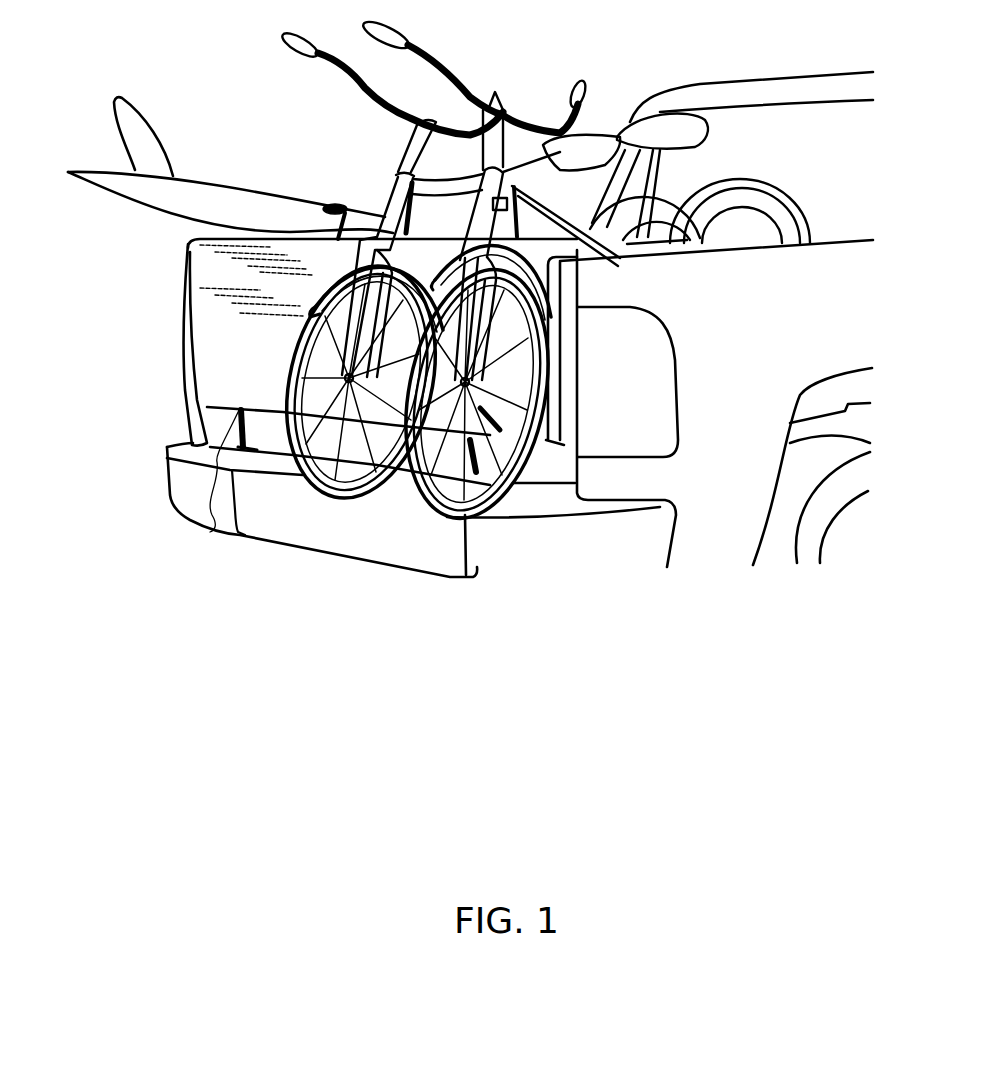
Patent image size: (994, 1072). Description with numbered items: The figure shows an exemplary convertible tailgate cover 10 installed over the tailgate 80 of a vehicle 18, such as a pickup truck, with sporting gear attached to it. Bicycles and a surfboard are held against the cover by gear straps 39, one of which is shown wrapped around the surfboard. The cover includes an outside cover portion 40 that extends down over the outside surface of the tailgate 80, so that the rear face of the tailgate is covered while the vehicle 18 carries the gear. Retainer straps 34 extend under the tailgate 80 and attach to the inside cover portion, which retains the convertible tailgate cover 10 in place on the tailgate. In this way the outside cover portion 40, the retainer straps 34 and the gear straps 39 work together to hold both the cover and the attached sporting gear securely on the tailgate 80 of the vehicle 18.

The convertible tailgate cover 10 is at (228, 260).
The vehicle 18 is at (717, 503).
The retainer straps 34 is at (210, 532).
The gear straps 39 is at (325, 205).
The outside cover portion 40 is at (228, 336).
The tailgate 80 is at (557, 467).